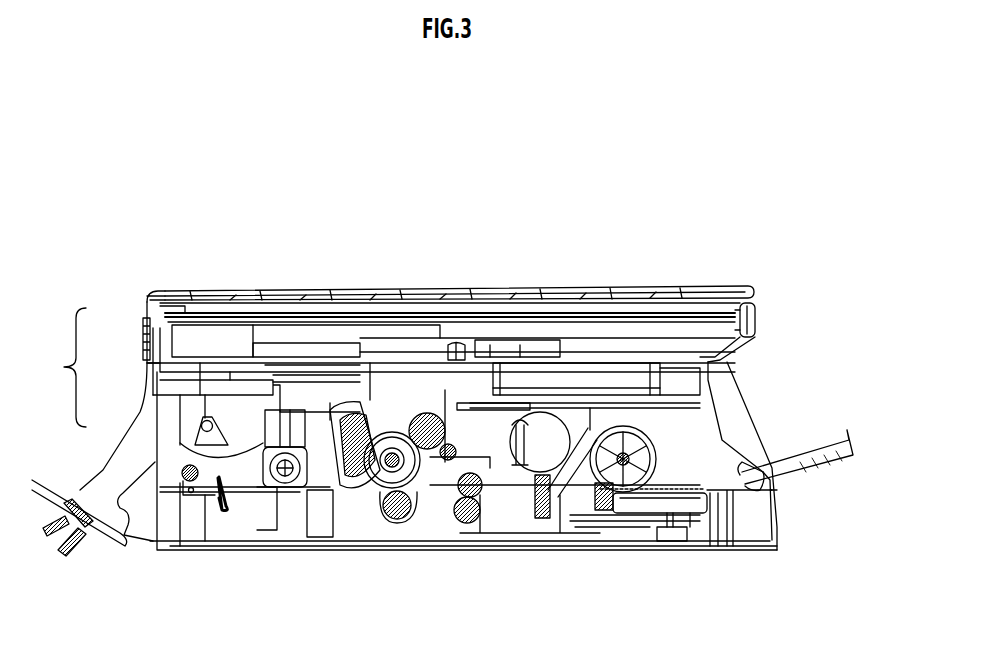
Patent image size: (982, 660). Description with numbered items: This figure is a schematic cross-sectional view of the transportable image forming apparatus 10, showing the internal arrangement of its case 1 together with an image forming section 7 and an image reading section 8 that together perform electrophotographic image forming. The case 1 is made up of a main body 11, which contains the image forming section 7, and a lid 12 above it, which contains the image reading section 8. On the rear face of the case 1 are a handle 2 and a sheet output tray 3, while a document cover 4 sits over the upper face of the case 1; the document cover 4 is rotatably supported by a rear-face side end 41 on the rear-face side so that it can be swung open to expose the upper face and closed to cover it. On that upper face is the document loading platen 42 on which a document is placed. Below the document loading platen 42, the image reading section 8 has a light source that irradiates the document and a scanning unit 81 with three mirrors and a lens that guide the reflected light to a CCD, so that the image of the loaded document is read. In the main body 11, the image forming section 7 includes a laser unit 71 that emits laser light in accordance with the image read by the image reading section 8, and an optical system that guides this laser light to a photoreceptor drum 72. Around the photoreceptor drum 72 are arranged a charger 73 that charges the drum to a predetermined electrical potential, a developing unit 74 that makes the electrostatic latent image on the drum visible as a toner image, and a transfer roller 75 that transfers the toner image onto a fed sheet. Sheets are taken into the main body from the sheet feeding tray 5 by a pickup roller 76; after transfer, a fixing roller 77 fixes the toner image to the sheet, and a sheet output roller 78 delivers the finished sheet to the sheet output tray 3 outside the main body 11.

The case 1 is at (64, 367).
The handle 2 is at (88, 530).
The sheet output tray 3 is at (62, 470).
The document cover 4 is at (672, 297).
The sheet feeding tray 5 is at (847, 430).
The image forming section 7 is at (768, 390).
The image reading section 8 is at (767, 304).
The transportable image forming apparatus 10 is at (600, 220).
The main body 11 is at (180, 419).
The lid 12 is at (150, 340).
The rear-face side end 41 is at (160, 326).
The document loading platen 42 is at (482, 400).
The laser unit 71 is at (584, 376).
The photoreceptor drum 72 is at (382, 472).
The charger 73 is at (368, 432).
The developing unit 74 is at (430, 436).
The transfer roller 75 is at (397, 522).
The pickup roller 76 is at (613, 500).
The fixing roller 77 is at (283, 487).
The sheet output roller 78 is at (185, 540).
The scanning unit 81 is at (540, 332).